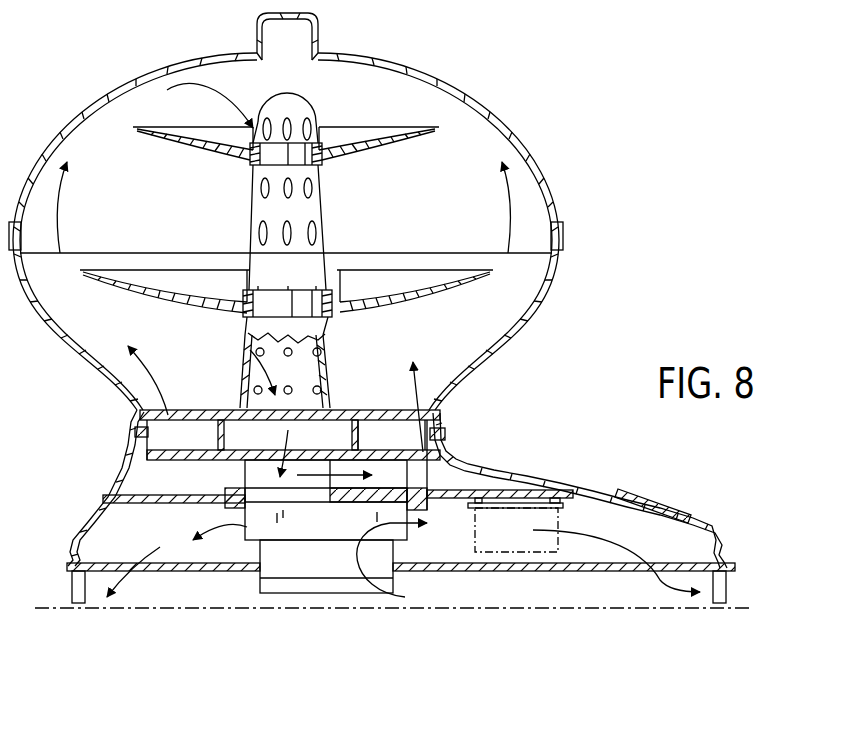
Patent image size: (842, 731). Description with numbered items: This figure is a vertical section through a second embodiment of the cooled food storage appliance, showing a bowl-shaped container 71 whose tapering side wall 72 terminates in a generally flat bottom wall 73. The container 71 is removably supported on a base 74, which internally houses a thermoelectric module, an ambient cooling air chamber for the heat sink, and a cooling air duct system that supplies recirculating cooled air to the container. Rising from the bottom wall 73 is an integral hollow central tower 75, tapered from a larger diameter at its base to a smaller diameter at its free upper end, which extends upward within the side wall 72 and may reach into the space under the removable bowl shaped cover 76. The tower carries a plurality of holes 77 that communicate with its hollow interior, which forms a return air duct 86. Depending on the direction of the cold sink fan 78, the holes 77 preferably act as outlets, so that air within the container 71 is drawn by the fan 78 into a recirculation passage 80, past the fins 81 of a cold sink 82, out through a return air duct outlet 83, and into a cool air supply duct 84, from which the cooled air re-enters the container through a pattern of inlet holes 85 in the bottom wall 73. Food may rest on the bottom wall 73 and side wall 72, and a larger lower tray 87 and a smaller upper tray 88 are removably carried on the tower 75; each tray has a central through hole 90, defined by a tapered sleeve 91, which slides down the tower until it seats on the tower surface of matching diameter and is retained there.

The container 71 is at (567, 262).
The tapering side wall 72 is at (538, 307).
The bottom wall 73 is at (220, 407).
The base 74 is at (603, 498).
The hollow central tower 75 is at (252, 215).
The bowl shaped cover 76 is at (447, 68).
The holes 77 is at (292, 237).
The cold sink fan 78 is at (257, 468).
The recirculation passage 80 is at (430, 477).
The fins 81 is at (380, 452).
The cold sink 82 is at (350, 480).
The return air duct outlet 83 is at (420, 452).
The cool air supply duct 84 is at (155, 425).
The inlet holes 85 is at (168, 433).
The return air duct 86 is at (297, 347).
The lower tray 87 is at (167, 293).
The upper tray 88 is at (197, 143).
The central through hole 90 is at (313, 137).
The tapered sleeve 91 is at (277, 157).